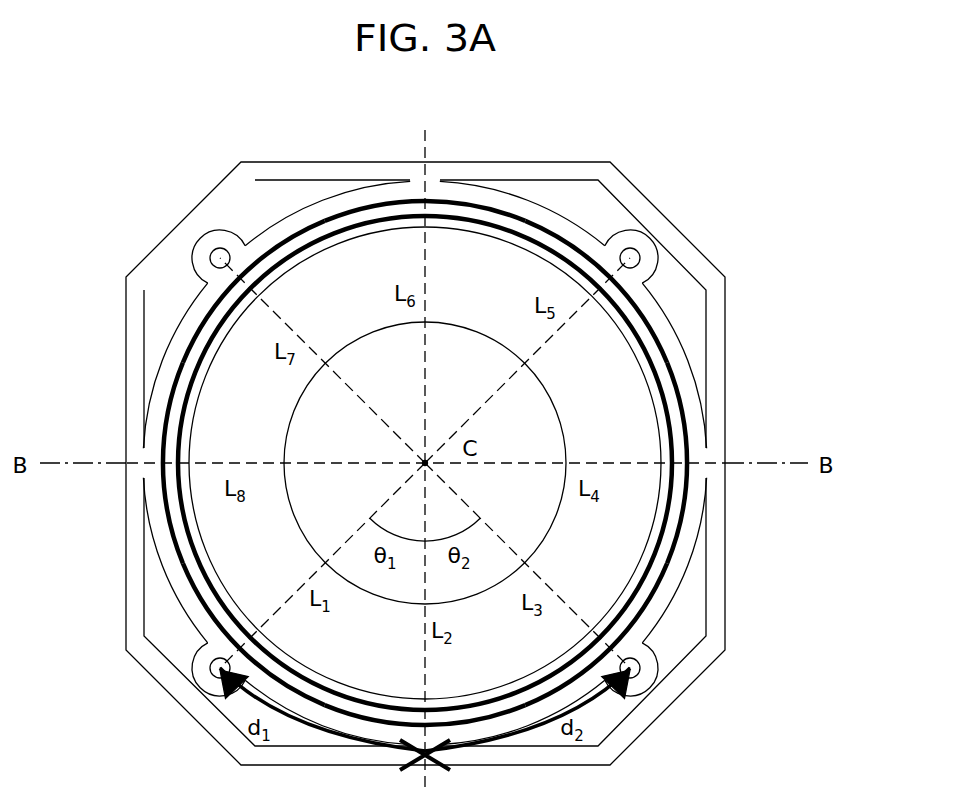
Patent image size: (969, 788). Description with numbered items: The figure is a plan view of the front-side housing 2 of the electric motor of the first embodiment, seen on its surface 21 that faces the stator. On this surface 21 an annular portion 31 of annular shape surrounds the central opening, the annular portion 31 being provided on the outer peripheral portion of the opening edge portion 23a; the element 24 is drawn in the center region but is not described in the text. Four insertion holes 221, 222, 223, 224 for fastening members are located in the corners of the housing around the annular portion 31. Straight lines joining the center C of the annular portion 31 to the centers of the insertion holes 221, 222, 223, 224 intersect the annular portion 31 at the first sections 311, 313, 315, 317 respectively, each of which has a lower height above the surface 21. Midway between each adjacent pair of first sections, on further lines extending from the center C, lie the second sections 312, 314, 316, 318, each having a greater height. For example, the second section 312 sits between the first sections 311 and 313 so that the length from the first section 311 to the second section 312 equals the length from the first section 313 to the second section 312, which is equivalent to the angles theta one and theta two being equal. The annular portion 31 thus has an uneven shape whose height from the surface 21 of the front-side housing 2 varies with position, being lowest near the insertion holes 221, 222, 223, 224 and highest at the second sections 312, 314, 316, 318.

The front-side housing 2 is at (703, 246).
The surface 21 is at (700, 384).
The opening edge portion 23a is at (542, 257).
The opening 24 is at (468, 328).
The annular portion 31 is at (658, 353).
The first section 311 is at (265, 640).
The second section 312 is at (430, 718).
The first section 313 is at (610, 647).
The second section 314 is at (683, 463).
The first section 315 is at (608, 287).
The second section 316 is at (428, 205).
The first section 317 is at (253, 273).
The second section 318 is at (163, 463).
The insertion hole 221 is at (195, 674).
The insertion hole 222 is at (655, 674).
The insertion hole 223 is at (628, 247).
The insertion hole 224 is at (222, 248).